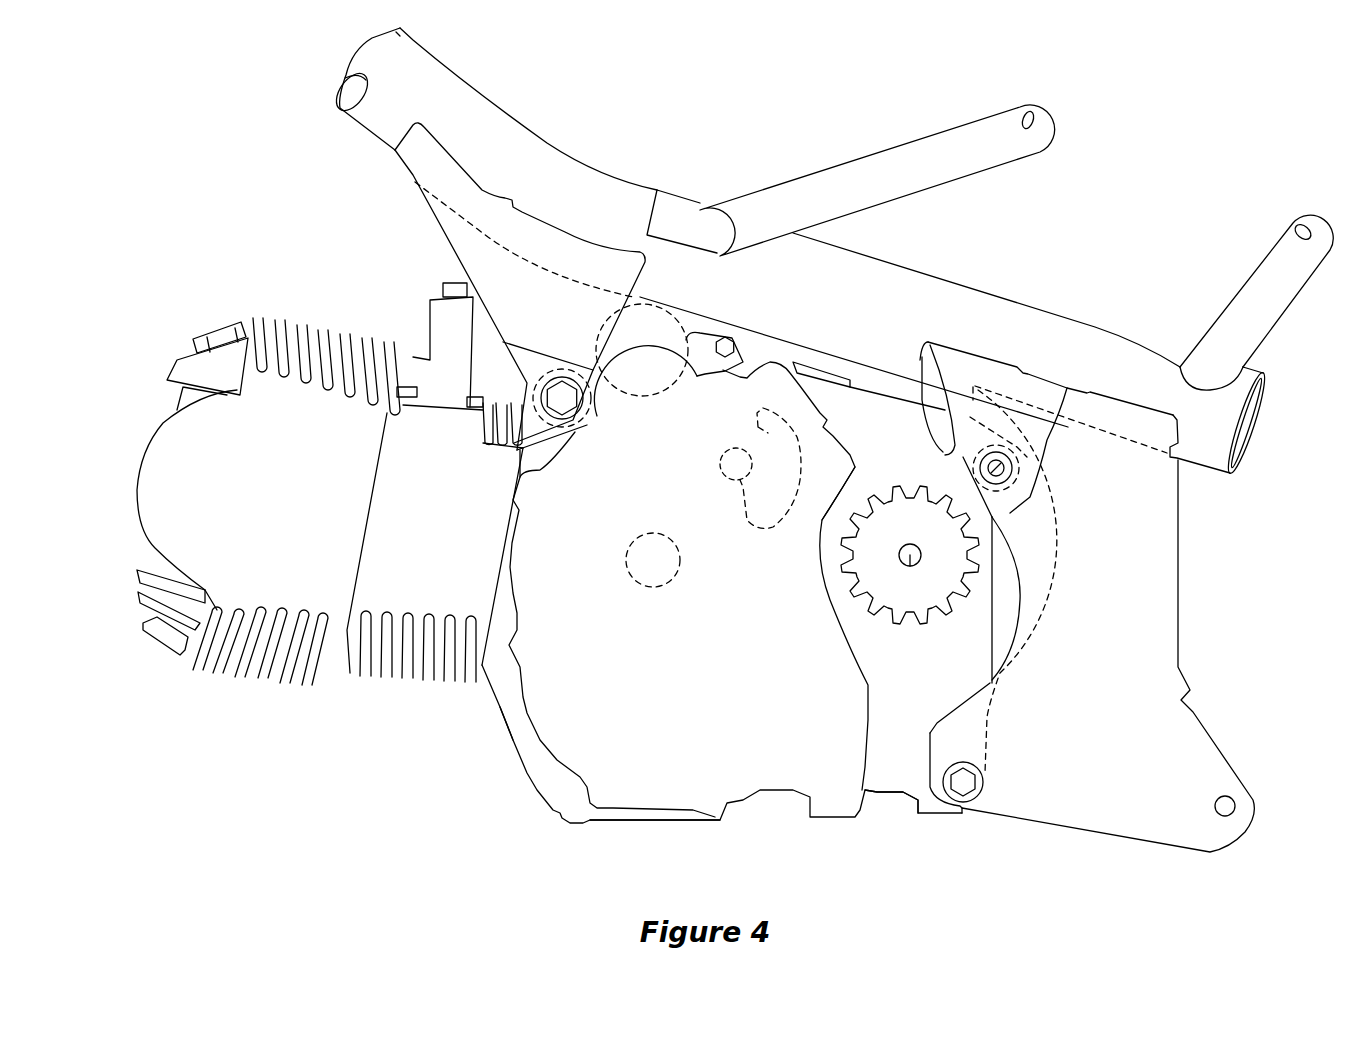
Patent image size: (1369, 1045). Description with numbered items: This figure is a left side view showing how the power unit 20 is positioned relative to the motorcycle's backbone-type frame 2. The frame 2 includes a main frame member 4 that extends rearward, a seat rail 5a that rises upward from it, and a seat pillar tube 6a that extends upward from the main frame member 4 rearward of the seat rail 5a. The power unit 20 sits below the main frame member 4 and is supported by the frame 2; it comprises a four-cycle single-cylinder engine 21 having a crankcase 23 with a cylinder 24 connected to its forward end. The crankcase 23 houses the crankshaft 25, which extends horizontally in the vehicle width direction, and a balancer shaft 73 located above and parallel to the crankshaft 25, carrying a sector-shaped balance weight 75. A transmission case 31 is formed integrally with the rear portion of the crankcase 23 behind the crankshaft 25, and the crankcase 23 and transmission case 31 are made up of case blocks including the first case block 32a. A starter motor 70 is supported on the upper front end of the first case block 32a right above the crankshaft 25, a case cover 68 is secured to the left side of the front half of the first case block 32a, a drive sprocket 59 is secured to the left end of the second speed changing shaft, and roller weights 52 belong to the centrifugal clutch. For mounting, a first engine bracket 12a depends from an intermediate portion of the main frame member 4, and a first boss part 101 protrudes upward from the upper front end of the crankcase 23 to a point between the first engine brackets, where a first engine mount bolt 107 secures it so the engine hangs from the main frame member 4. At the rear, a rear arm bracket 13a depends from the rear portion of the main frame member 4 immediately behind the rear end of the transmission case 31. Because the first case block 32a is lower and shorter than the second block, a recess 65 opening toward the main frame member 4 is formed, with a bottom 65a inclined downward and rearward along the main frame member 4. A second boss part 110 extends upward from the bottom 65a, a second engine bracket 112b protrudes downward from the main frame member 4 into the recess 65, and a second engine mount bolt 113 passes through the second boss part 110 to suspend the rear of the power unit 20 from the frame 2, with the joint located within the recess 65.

The frame 2 is at (343, 126).
The main frame member 4 is at (598, 190).
The seat rail 5a is at (892, 170).
The seat pillar tube 6a is at (1280, 300).
The first engine bracket 12a is at (457, 233).
The rear arm bracket 13a is at (1157, 607).
The power unit 20 is at (427, 803).
The engine 21 is at (173, 364).
The crankcase 23 is at (540, 772).
The cylinder 24 is at (397, 513).
The crankshaft 25 is at (653, 567).
The transmission case 31 is at (970, 677).
The first case block 32a is at (893, 735).
The roller weights 52 is at (897, 557).
The drive sprocket 59 is at (860, 538).
The recess 65 is at (1010, 513).
The bottom 65a is at (922, 357).
The case cover 68 is at (667, 790).
The starter motor 70 is at (660, 317).
The balancer shaft 73 is at (720, 462).
The balance weight 75 is at (758, 427).
The first boss part 101 is at (557, 362).
The first engine mount bolt 107 is at (573, 400).
The second boss part 110 is at (965, 433).
The second engine bracket 112b is at (1027, 430).
The second engine mount bolt 113 is at (1013, 468).